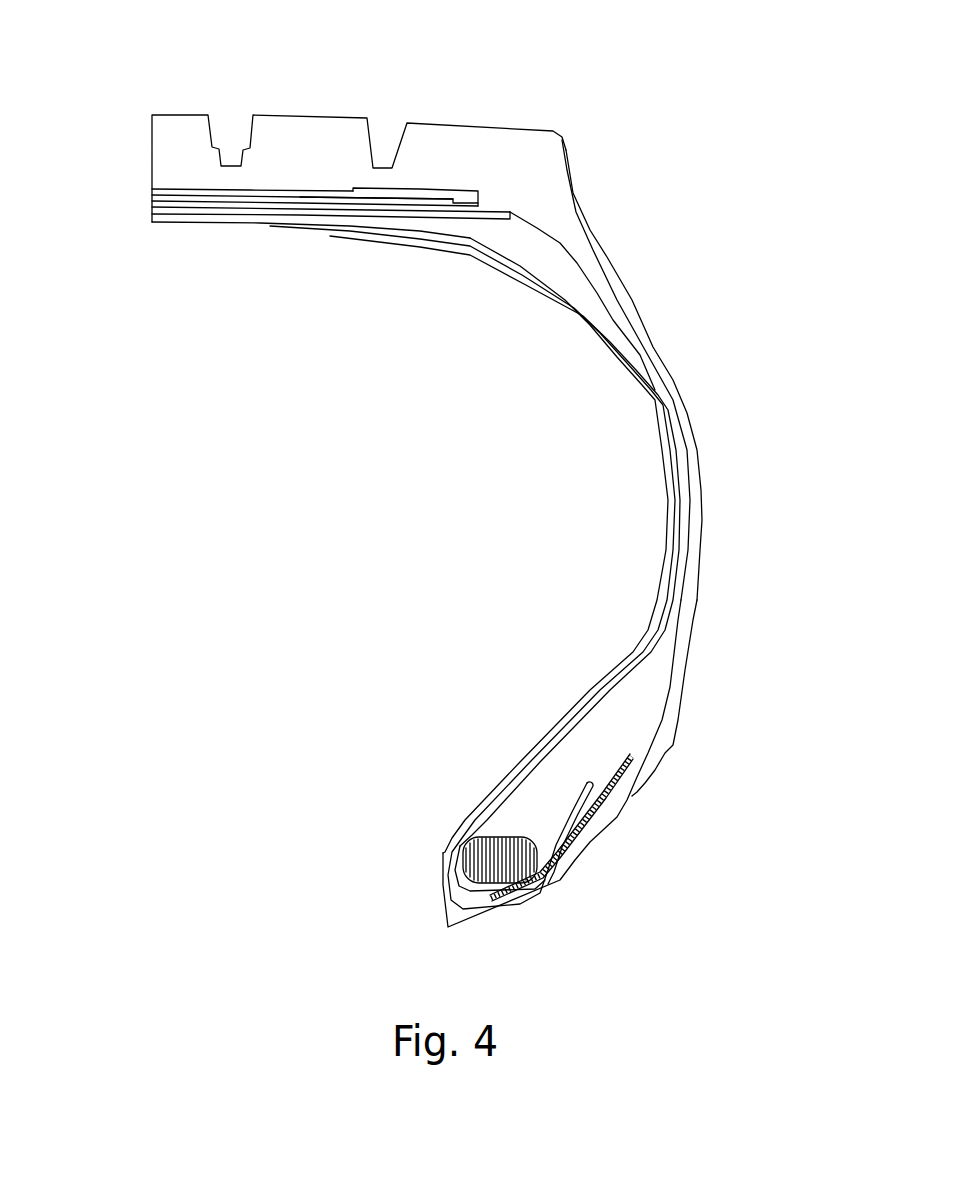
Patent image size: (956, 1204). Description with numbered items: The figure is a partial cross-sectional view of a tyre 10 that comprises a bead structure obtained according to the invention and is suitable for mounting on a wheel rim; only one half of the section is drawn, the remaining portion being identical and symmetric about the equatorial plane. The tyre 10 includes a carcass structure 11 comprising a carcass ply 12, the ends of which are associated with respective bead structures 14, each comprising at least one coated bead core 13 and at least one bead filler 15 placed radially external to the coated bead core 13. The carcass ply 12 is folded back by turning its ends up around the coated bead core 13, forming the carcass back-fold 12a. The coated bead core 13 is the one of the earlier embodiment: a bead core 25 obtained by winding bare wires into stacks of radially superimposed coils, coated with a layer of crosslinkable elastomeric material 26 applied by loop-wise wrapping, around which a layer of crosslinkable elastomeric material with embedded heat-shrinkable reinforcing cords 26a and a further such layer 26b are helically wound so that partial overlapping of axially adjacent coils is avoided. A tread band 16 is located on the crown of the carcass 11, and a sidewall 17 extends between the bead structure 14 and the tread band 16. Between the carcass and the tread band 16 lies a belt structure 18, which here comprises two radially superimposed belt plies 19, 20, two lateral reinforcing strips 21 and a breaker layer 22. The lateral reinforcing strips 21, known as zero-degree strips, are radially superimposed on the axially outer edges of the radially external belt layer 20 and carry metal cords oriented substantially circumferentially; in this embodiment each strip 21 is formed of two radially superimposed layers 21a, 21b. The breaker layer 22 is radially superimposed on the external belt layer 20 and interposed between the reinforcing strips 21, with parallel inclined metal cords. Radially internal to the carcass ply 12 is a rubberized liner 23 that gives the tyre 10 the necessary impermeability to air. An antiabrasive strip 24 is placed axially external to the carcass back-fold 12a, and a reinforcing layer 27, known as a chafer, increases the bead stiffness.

The tyre 10 is at (130, 98).
The carcass structure 11 is at (588, 348).
The carcass ply 12 is at (242, 214).
The carcass back-fold 12a is at (615, 785).
The coated bead core 13 is at (468, 842).
The bead structure 14 is at (674, 744).
The bead filler 15 is at (565, 767).
The tread band 16 is at (525, 197).
The sidewall 17 is at (690, 484).
The belt structure 18 is at (273, 182).
The belt ply 19 is at (360, 215).
The radially external belt layer 20 is at (441, 198).
The lateral reinforcing strip 21 is at (420, 186).
The layer of lateral reinforcing strip 21a is at (458, 200).
The layer of lateral reinforcing strip 21b is at (441, 192).
The breaker layer 22 is at (155, 186).
The liner 23 is at (192, 220).
The antiabrasive strip 24 is at (605, 820).
The bead core 25 is at (507, 878).
The layer of crosslinkable elastomeric material 26 is at (455, 866).
The layer of crosslinkable elastomeric material with embedded heat-shrinkable reinfo 26a is at (480, 840).
The further layer of crosslinkable elastomeric material with embedded heat-shrinkabl 26b is at (503, 838).
The reinforcing layer (chafer) 27 is at (590, 843).